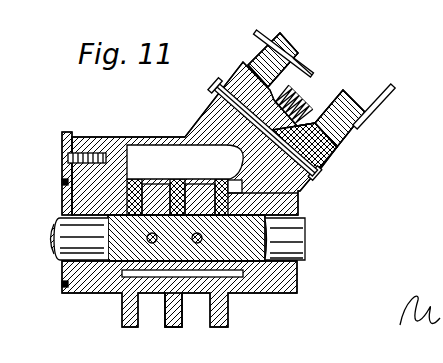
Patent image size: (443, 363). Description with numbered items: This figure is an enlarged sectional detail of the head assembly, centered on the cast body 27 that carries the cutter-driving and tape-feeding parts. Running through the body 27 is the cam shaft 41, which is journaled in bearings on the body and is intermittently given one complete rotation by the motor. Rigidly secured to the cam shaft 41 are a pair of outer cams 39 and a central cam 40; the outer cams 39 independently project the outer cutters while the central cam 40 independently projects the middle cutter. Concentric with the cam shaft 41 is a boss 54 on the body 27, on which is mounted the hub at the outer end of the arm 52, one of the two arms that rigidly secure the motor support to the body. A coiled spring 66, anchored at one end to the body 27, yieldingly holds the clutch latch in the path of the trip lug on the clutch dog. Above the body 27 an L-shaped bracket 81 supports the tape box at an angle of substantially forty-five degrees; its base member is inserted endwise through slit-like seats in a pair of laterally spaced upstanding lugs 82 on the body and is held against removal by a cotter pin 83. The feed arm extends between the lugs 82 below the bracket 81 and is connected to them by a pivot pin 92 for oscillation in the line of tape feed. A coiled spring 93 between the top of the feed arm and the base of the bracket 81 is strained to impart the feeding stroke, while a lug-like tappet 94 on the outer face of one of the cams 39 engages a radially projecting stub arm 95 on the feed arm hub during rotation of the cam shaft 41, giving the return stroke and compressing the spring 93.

The body 27 is at (132, 134).
The outer cams 39 is at (123, 313).
The central cam 40 is at (173, 327).
The cam shaft 41 is at (302, 240).
The arm 52 is at (66, 182).
The boss 54 is at (68, 203).
The coiled spring 66 is at (217, 79).
The L-shaped bracket 81 is at (301, 67).
The upstanding lugs 82 is at (272, 58).
The cotter pin 83 is at (271, 35).
The pivot pin 92 is at (323, 168).
The coiled spring 93 is at (303, 81).
The tappet 94 is at (298, 197).
The stub arm 95 is at (240, 163).